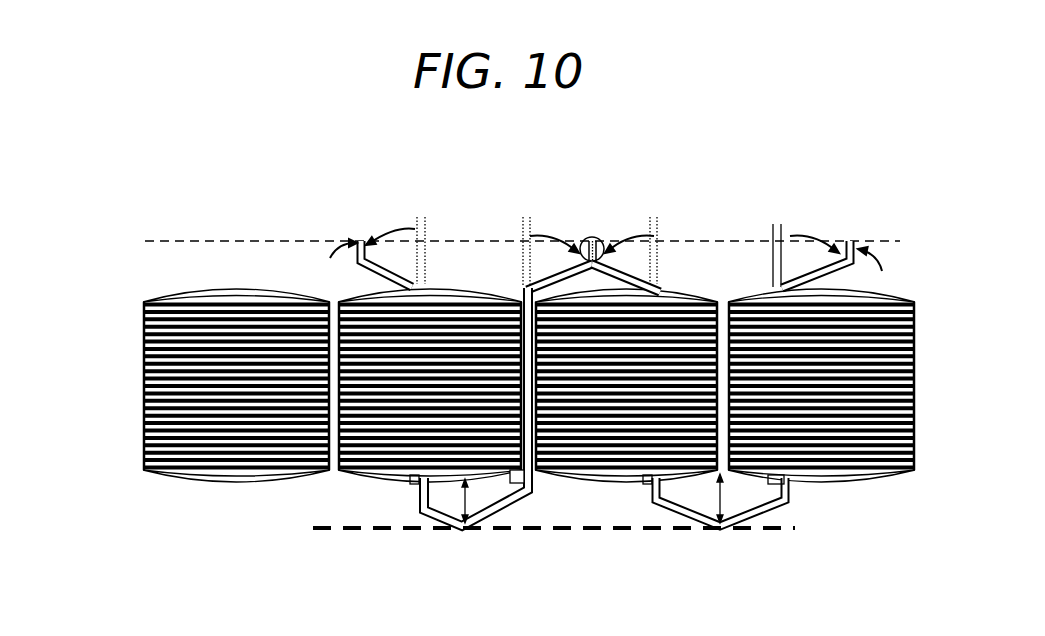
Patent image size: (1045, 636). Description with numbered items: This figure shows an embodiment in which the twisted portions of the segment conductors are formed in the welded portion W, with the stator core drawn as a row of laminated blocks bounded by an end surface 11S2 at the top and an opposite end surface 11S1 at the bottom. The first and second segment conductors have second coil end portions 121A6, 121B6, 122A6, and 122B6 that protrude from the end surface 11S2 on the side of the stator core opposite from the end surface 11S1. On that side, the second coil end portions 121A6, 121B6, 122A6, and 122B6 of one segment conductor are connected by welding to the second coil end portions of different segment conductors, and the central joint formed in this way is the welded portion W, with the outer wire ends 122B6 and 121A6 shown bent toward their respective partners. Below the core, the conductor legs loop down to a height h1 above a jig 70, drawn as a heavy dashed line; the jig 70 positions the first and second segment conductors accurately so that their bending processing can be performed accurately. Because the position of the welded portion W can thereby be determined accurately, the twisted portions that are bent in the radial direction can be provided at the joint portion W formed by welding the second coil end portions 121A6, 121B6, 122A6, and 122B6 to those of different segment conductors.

The second coil end portion 122B6 is at (361, 240).
The second coil end portion 121B6 is at (626, 264).
The second coil end portion 122A6 is at (597, 240).
The second coil end portion 121A6 is at (851, 240).
The welded portion W is at (588, 240).
The end surface 11S2 is at (145, 301).
The end surface 11S1 is at (145, 470).
The jig 70 is at (325, 530).
The height dimension h1 is at (581, 498).